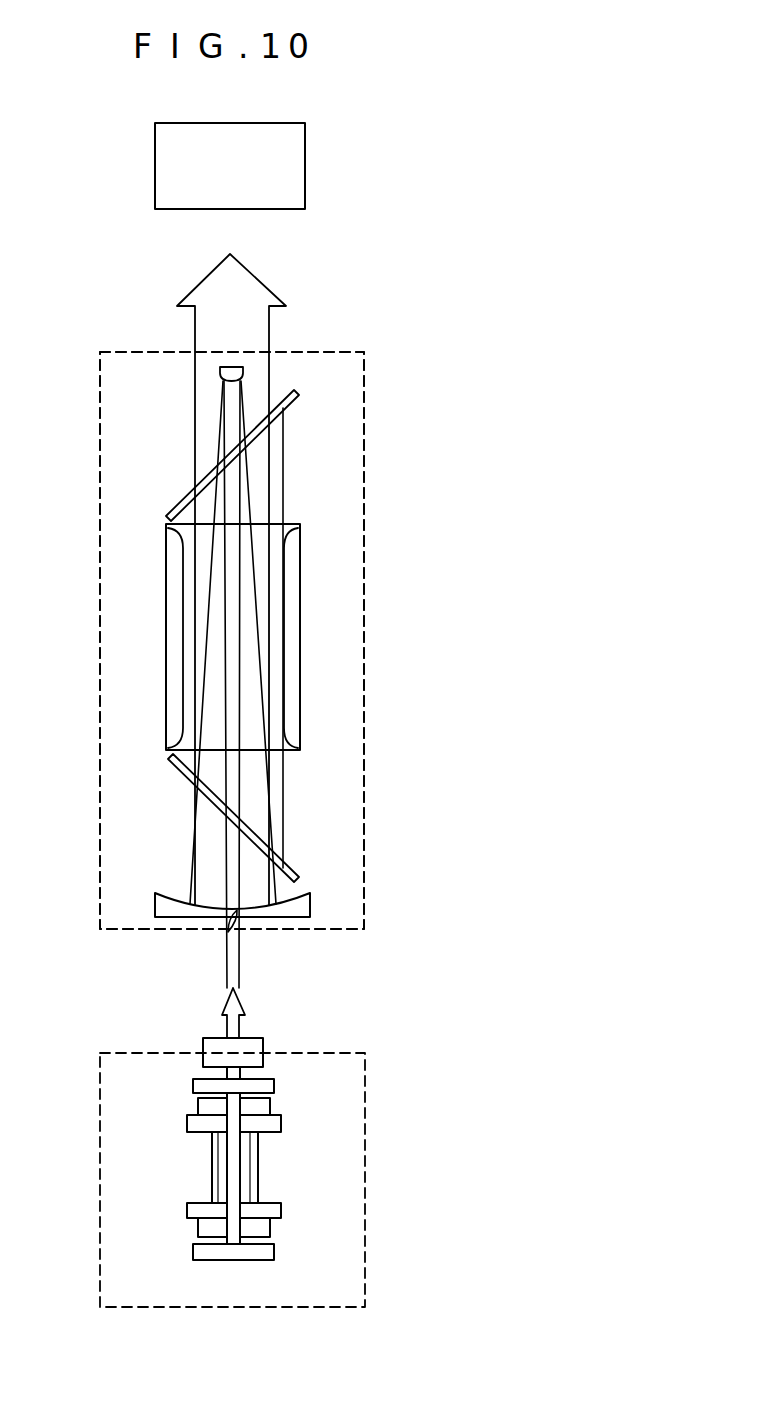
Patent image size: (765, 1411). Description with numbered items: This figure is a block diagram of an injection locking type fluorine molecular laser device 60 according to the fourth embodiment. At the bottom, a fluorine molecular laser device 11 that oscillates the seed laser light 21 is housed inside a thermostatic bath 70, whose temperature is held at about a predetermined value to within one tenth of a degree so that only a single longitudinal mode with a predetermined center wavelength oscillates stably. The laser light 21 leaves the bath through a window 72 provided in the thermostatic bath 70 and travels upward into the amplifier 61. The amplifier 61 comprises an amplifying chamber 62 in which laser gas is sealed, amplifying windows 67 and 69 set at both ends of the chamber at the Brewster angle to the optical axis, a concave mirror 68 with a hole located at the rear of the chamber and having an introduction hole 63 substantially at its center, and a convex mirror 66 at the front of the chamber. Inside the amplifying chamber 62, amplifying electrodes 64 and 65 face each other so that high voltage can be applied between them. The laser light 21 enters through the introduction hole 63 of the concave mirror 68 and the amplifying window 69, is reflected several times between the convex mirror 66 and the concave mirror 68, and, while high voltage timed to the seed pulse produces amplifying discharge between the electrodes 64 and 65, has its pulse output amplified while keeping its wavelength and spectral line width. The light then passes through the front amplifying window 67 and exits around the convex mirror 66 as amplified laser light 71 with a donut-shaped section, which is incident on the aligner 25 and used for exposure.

The fluorine molecular laser device 11 is at (258, 1162).
The laser light 21 is at (227, 962).
The aligner 25 is at (305, 157).
The injection locking type fluorine molecular laser device 60 is at (540, 333).
The amplifier 61 is at (364, 463).
The amplifying chamber 62 is at (300, 522).
The introduction hole 63 is at (237, 933).
The amplifying electrode 64 is at (170, 620).
The amplifying electrode 65 is at (295, 663).
The convex mirror 66 is at (243, 372).
The amplifying window 67 is at (186, 502).
The concave mirror with a hole 68 is at (312, 897).
The amplifying window 69 is at (173, 762).
The thermostatic bath 70 is at (365, 1131).
The amplified laser light 71 is at (195, 322).
The window 72 is at (255, 1037).